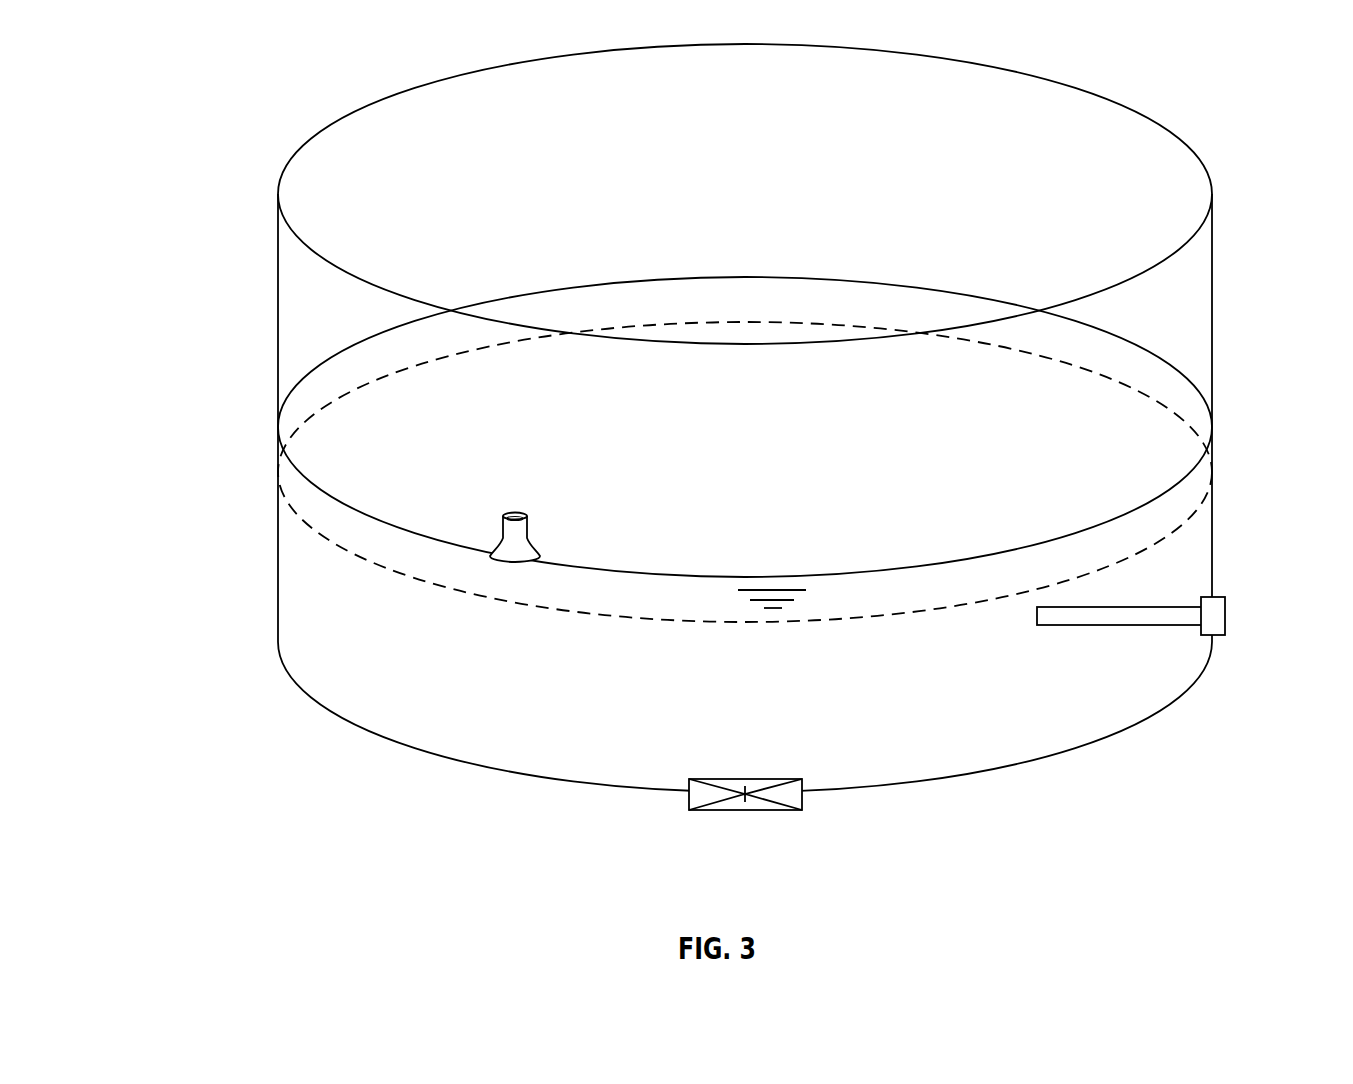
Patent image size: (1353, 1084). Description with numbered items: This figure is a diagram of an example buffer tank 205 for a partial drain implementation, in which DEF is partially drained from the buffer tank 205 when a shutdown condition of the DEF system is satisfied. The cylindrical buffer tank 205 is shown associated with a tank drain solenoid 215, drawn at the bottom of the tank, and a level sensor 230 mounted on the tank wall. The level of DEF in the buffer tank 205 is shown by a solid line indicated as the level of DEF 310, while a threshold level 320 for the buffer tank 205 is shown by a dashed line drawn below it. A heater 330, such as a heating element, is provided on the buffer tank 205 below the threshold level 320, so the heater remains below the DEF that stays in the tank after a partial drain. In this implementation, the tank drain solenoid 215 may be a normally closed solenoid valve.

The buffer tank 205 is at (162, 101).
The tank drain solenoid 215 is at (798, 812).
The level sensor 230 is at (511, 512).
The level of DEF 310 is at (1172, 475).
The threshold level 320 is at (1172, 528).
The heater 330 is at (1220, 596).